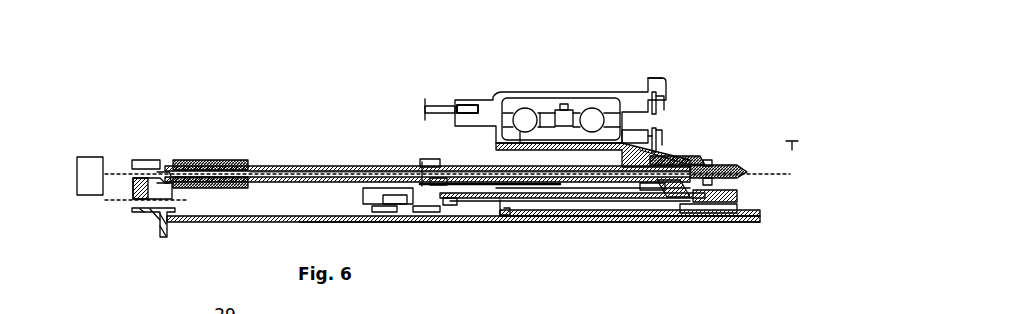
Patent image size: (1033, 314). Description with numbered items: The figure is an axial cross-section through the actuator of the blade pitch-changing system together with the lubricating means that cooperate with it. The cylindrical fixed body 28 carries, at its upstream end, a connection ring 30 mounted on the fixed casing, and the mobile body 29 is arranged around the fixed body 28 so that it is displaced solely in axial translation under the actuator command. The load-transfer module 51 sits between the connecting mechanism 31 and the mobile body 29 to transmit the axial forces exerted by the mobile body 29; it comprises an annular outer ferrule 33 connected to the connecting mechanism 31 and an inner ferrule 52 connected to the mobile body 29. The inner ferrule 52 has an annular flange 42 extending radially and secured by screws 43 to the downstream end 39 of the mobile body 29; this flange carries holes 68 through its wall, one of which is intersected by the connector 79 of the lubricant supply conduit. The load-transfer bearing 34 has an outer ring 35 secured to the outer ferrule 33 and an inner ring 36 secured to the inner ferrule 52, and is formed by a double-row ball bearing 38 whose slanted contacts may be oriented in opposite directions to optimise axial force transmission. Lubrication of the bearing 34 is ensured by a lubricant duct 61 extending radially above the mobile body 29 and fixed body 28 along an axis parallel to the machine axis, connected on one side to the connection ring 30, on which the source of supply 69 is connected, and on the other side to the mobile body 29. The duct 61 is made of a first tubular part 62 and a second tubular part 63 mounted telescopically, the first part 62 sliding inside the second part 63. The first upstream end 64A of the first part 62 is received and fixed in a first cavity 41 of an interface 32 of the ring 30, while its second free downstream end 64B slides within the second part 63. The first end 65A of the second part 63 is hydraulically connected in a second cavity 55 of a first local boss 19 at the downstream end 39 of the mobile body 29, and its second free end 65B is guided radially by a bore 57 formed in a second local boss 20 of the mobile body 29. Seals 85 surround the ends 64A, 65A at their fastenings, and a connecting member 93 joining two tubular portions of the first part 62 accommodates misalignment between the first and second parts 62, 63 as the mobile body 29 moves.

The first local boss 19 is at (688, 168).
The second local boss 20 is at (430, 162).
The fixed body 28 is at (463, 216).
The mobile body 29 is at (628, 200).
The connection ring 30 is at (150, 212).
The connecting mechanism 31 is at (438, 100).
The interface 32 is at (147, 158).
The outer ferrule 33 is at (585, 105).
The load-transfer bearing 34 is at (560, 128).
The outer ring 35 is at (546, 108).
The inner ring 36 is at (522, 142).
The double-row ball bearing 38 is at (524, 118).
The downstream end 39 is at (704, 213).
The first cavity 41 is at (143, 193).
The annular flange 42 is at (706, 160).
The screws 43 is at (733, 192).
The load-transfer module 51 is at (634, 82).
The inner ferrule 52 is at (606, 180).
The second cavity 55 is at (678, 197).
The bore 57 is at (437, 162).
The lubricant duct 61 is at (302, 160).
The first tubular part 62 is at (260, 170).
The second tubular part 63 is at (596, 178).
The first upstream end 64A is at (160, 160).
The second free downstream end 64B is at (490, 192).
The first end 65A is at (660, 190).
The second free end 65B is at (448, 190).
The holes 68 is at (714, 166).
The source of supply 69 is at (92, 168).
The connector 79 is at (792, 140).
The seals 85 is at (676, 156).
The connecting member 93 is at (212, 163).